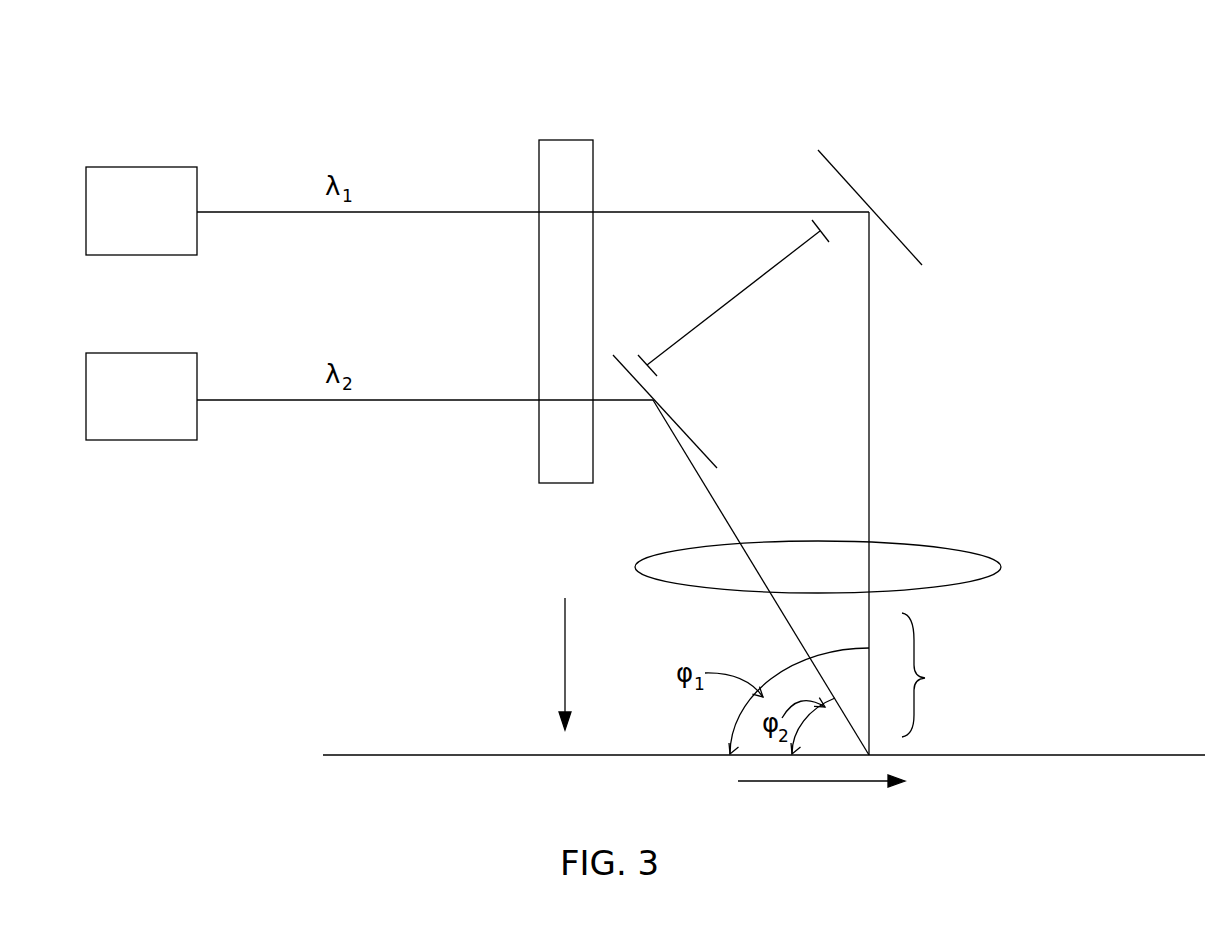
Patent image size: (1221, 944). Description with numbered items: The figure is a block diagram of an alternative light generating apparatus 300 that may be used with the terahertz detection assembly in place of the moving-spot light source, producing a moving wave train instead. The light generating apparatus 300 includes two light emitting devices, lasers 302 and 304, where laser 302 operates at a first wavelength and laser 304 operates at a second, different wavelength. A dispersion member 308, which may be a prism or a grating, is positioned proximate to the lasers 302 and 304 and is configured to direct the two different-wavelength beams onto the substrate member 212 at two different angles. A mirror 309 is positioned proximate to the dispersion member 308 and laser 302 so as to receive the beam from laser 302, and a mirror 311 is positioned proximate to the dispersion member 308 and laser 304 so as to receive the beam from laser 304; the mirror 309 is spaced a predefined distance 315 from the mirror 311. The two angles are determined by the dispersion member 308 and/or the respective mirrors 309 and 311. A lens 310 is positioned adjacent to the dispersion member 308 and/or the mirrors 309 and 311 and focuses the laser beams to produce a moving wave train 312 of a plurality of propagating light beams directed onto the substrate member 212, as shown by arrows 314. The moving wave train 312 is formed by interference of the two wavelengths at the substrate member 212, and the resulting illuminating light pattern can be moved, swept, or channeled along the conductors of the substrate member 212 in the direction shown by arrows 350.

The light generating apparatus 300 is at (1058, 72).
The laser 302 is at (141, 211).
The laser 304 is at (141, 397).
The dispersion member 308 is at (562, 140).
The mirror 309 is at (857, 172).
The lens 310 is at (938, 540).
The mirror 311 is at (660, 390).
The moving wave train 312 is at (939, 675).
The arrows 314 is at (565, 623).
The predefined distance 315 is at (780, 260).
The substrate member 212 is at (1112, 752).
The arrows 350 is at (763, 782).